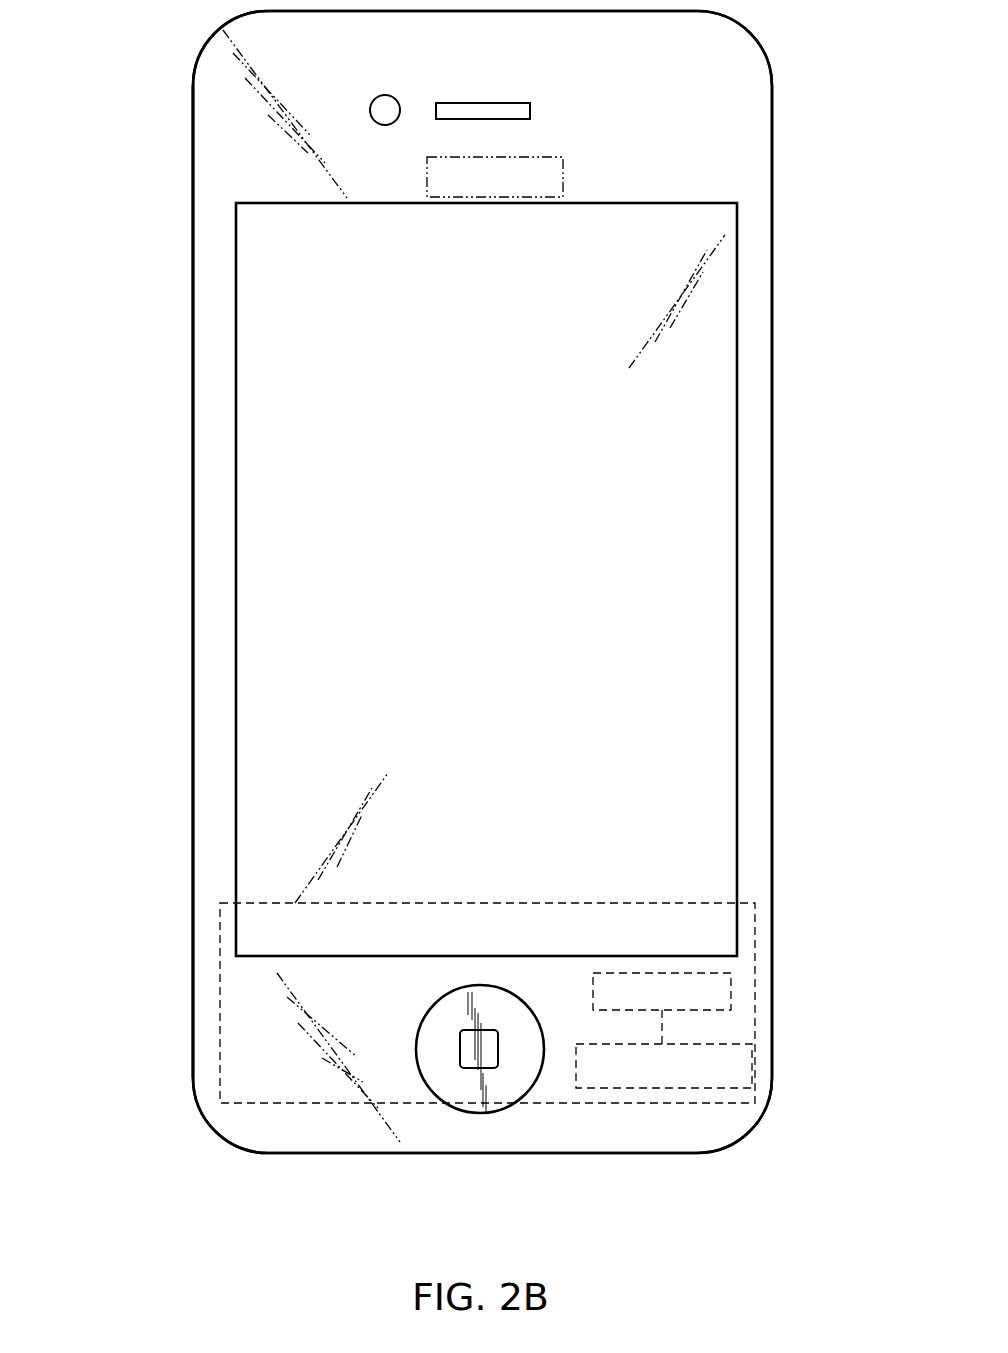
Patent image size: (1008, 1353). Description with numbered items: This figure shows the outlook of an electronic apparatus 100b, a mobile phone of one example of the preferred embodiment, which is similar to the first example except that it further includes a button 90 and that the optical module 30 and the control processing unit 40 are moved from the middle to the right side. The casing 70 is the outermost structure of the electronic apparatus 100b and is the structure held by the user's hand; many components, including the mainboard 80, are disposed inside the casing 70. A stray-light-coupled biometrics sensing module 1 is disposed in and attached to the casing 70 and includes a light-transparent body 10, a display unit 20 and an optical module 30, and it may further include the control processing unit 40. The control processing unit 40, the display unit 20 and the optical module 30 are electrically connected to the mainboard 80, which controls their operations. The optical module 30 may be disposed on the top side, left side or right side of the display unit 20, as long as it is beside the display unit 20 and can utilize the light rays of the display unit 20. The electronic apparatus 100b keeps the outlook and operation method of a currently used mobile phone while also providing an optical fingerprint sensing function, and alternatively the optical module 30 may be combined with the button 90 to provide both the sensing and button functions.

The electronic apparatus 100b is at (176, 272).
The stray-light-coupled biometrics sensing module 1 is at (836, 368).
The light-transparent body 10 is at (207, 555).
The display unit 20 is at (262, 390).
The optical module 30 is at (563, 178).
The control processing unit 40 is at (752, 1068).
The casing 70 is at (193, 323).
The mainboard 80 is at (220, 1013).
The button 90 is at (448, 1098).